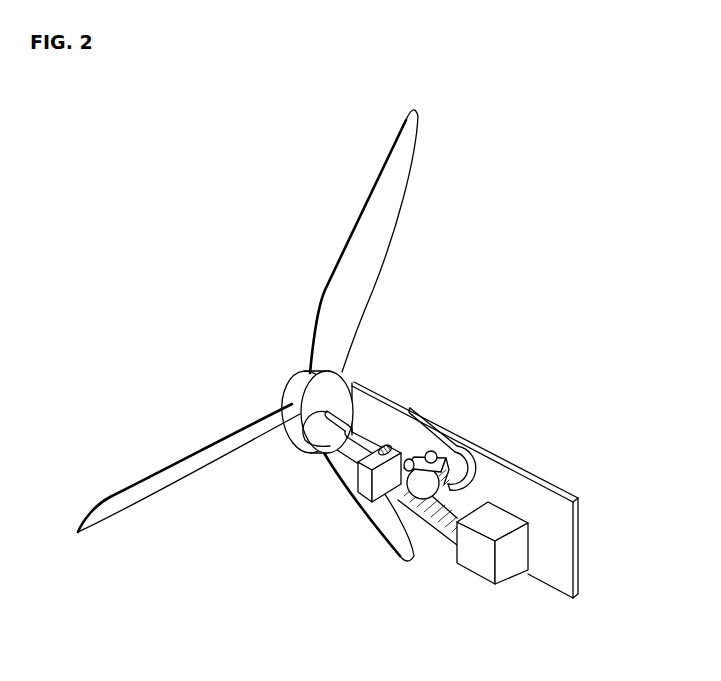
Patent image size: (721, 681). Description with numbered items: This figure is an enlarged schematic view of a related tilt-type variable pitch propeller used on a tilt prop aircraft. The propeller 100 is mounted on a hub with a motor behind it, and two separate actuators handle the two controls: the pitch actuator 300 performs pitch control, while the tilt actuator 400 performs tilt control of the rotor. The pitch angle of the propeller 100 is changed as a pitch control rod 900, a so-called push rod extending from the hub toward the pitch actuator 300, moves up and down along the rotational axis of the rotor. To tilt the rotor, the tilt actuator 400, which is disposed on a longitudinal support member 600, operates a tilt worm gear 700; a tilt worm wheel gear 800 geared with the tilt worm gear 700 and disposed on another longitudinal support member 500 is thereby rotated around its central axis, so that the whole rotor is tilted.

The propeller 100 is at (362, 244).
The pitch actuator 300 is at (367, 485).
The tilt actuator 400 is at (481, 562).
The longitudinal support member 500 is at (381, 413).
The longitudinal support member 600 is at (545, 510).
The tilt worm gear 700 is at (413, 515).
The tilt worm wheel gear 800 is at (455, 460).
The pitch control rod 900 is at (303, 446).